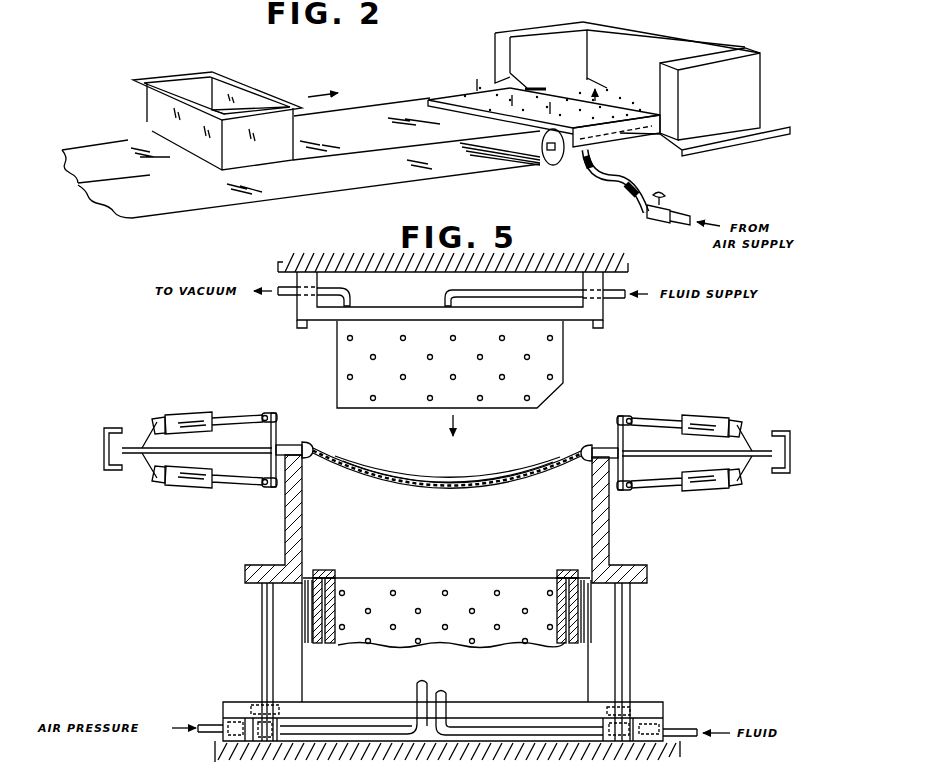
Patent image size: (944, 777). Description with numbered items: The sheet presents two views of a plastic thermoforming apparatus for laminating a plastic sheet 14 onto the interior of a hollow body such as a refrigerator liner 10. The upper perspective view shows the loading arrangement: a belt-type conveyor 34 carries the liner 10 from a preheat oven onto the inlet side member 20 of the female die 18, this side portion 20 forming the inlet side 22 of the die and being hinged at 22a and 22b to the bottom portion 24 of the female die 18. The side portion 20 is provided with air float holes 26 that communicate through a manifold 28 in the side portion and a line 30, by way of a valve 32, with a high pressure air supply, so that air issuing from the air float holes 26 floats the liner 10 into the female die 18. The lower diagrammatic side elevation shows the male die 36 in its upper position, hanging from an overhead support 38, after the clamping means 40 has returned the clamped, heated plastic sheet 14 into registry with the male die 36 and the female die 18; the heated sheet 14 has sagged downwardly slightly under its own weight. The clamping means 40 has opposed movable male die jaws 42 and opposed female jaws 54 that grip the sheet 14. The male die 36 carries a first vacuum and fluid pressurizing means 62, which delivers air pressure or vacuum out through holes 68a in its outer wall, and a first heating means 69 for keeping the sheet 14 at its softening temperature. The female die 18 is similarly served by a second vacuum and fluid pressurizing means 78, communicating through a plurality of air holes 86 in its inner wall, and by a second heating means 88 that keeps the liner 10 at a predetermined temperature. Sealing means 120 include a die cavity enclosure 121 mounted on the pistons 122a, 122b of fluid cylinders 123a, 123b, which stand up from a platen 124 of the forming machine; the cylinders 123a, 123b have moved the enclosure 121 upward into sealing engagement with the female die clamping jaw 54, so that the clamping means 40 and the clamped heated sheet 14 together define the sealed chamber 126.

In FIG. 2, the liner 10 is at (257, 88).
In FIG. 5, the liner 10 is at (331, 573).
In FIG. 2, the belt-type conveyor 34 is at (372, 110).
In FIG. 2, the inlet side member 20 is at (487, 79).
In FIG. 2, the air float holes 26 is at (457, 100).
In FIG. 2, the hinge 22a is at (534, 89).
In FIG. 2, the bottom portion of the female die 24 is at (622, 90).
In FIG. 2, the female die 18 is at (681, 44).
In FIG. 5, the female die 18 is at (451, 602).
In FIG. 2, the hinge 22b is at (641, 110).
In FIG. 2, the side 22 is at (623, 134).
In FIG. 2, the manifold 28 is at (574, 151).
In FIG. 2, the line 30 is at (606, 180).
In FIG. 2, the valve 32 is at (655, 219).
In FIG. 5, the ceiling support 38 is at (626, 268).
In FIG. 5, the first vacuum and fluid pressurizing means 62 is at (355, 297).
In FIG. 5, the first heating means 69 is at (448, 296).
In FIG. 5, the holes 68a is at (500, 421).
In FIG. 5, the male die 36 is at (426, 383).
In FIG. 5, the clamping means 40 is at (188, 410).
In FIG. 5, the male die jaws 42 is at (297, 443).
In FIG. 5, the female jaws 54 is at (305, 460).
In FIG. 5, the plastic sheet 14 is at (497, 478).
In FIG. 5, the sealed chamber 126 is at (447, 526).
In FIG. 5, the sealing means 120 is at (282, 521).
In FIG. 5, the die cavity enclosure 121 is at (582, 540).
In FIG. 5, the air holes 86 is at (375, 598).
In FIG. 5, the piston 122a is at (262, 640).
In FIG. 5, the piston 122b is at (631, 647).
In FIG. 5, the platen 124 is at (209, 742).
In FIG. 5, the fluid cylinder 123a is at (277, 767).
In FIG. 5, the fluid cylinder 123b is at (630, 767).
In FIG. 5, the second vacuum and fluid pressurizing means 78 is at (414, 691).
In FIG. 5, the second heating means 88 is at (452, 696).